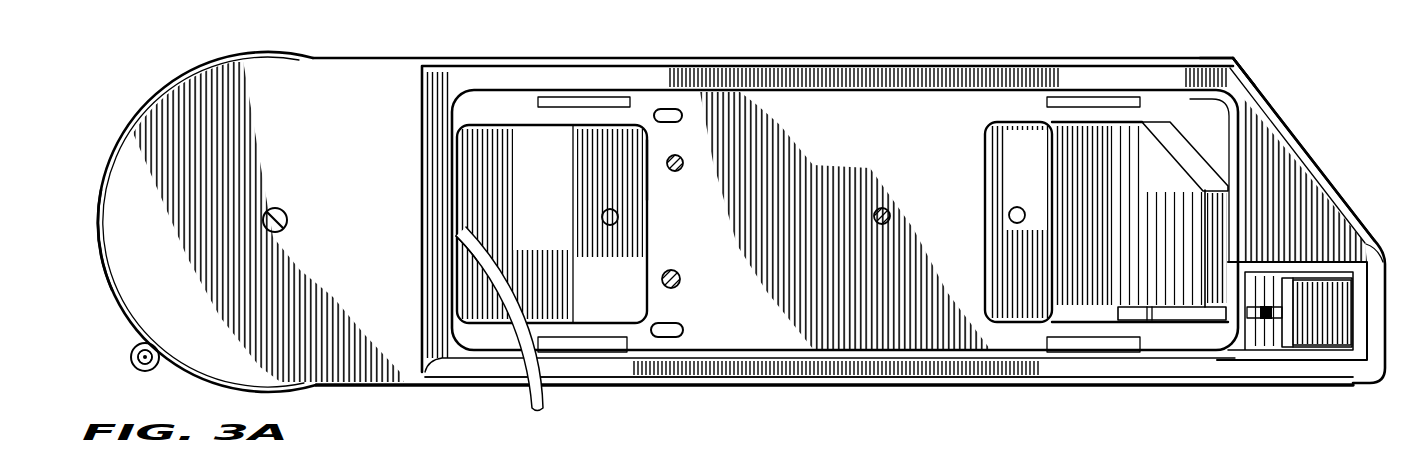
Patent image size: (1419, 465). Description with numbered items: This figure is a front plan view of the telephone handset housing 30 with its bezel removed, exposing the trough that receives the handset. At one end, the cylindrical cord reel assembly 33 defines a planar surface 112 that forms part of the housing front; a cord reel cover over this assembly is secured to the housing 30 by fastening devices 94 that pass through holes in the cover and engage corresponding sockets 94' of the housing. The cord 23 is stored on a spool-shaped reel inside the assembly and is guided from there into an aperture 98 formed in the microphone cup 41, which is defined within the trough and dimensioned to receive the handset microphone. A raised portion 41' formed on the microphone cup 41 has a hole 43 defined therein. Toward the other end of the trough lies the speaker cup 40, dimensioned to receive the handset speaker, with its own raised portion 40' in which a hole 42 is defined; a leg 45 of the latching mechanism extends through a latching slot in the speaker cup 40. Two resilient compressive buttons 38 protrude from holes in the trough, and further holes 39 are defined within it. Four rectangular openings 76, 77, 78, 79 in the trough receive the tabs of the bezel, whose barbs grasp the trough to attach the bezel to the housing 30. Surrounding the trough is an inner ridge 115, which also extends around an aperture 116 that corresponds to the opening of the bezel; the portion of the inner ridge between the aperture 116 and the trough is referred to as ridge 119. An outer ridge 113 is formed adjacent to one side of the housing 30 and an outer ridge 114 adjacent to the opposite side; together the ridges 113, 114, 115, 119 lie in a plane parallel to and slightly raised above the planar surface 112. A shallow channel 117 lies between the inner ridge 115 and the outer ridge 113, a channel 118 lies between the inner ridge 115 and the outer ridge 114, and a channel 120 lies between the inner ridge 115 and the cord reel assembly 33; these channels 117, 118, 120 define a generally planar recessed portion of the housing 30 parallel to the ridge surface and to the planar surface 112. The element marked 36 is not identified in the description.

The telephone handset housing 30 is at (171, 77).
The cord reel assembly 33 is at (112, 156).
The speaker cup 40 is at (745, 169).
The planar surface 112 is at (115, 247).
The sockets 94' is at (115, 343).
The fastening devices 94 is at (121, 363).
The microphone cup 41 is at (509, 224).
The aperture 98 is at (458, 228).
The rectangular opening 77 is at (567, 97).
The resilient compressive buttons 38 is at (683, 116).
The raised portion 41' is at (665, 175).
The holes 39 is at (683, 168).
The hole 43 is at (612, 225).
The raised portion 40' is at (1080, 222).
The hole 42 is at (1015, 223).
The rectangular opening 76 is at (1110, 97).
The shallow channel 117 is at (1250, 47).
The inner ridge 115 is at (1241, 100).
The outer ridge 113 is at (1313, 160).
The channel 120 is at (433, 364).
The cord 23 is at (529, 397).
The rectangular opening 79 is at (590, 350).
The channel 118 is at (720, 362).
The outer ridge 114 is at (808, 378).
The rectangular opening 78 is at (1080, 350).
The leg 45 is at (1137, 320).
The ridge 119 is at (1226, 313).
The aperture 116 is at (1267, 347).
The switch 36 is at (1323, 330).